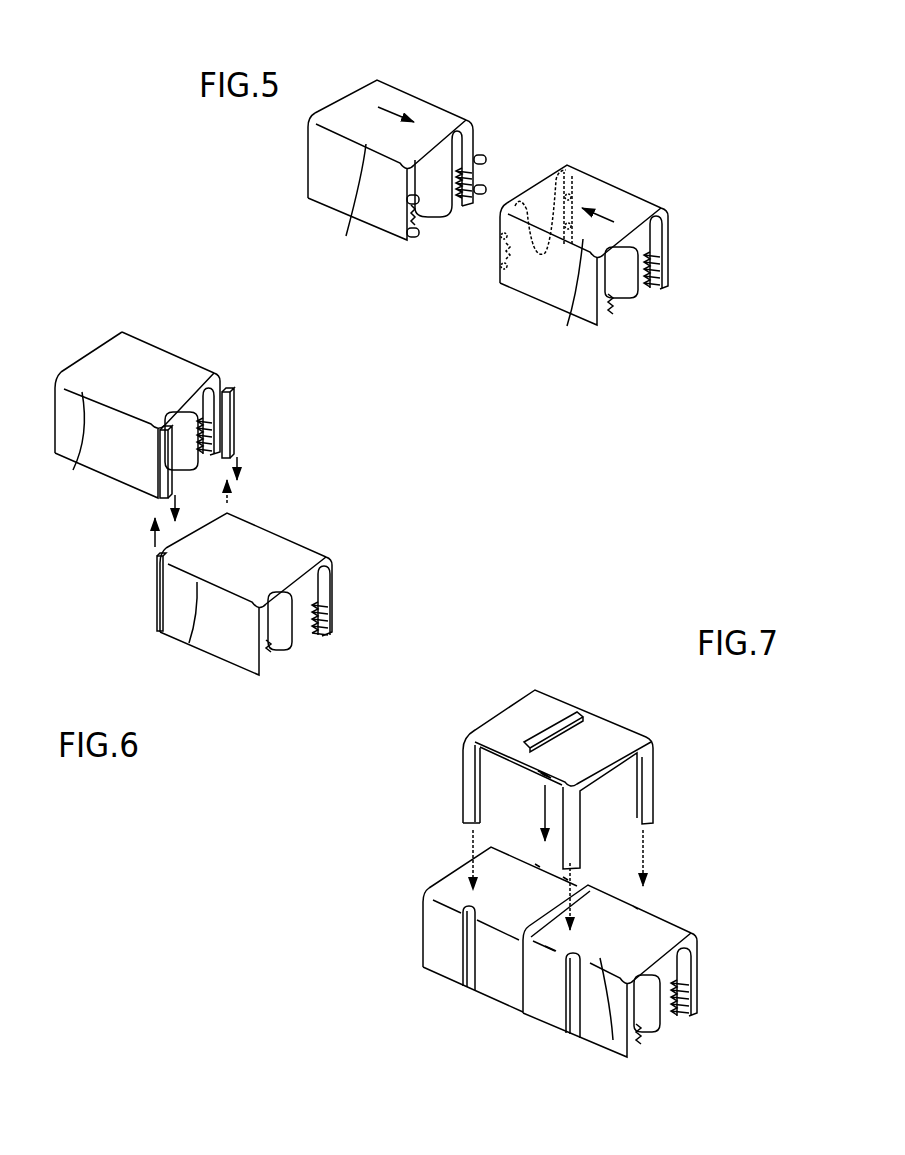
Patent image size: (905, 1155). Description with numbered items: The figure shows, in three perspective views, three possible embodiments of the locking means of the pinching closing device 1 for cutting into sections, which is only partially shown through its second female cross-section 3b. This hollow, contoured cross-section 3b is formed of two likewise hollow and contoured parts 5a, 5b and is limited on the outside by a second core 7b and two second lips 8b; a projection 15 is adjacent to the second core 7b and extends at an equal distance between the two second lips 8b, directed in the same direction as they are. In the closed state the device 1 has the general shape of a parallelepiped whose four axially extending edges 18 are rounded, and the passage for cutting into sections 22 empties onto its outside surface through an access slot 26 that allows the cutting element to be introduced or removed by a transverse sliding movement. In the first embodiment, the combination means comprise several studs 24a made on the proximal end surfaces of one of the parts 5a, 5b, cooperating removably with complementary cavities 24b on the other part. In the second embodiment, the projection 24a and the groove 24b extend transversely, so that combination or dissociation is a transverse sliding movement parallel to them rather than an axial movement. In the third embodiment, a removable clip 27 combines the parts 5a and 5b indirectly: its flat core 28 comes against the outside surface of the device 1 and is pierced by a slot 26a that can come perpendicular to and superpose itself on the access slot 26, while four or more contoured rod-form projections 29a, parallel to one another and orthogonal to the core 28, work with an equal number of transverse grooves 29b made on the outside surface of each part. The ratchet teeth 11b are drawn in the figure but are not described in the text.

In FIG. 5, the pinching closing device for cutting into sections 1 is at (682, 208).
In FIG. 6, the pinching closing device for cutting into sections 1 is at (209, 358).
In FIG. 7, the pinching closing device for cutting into sections 1 is at (564, 688).
In FIG. 5, the second female cross-section 3b is at (449, 96).
In FIG. 6, the second female cross-section 3b is at (136, 330).
In FIG. 7, the second female cross-section 3b is at (670, 911).
In FIG. 5, the first part of the female cross-section 5a is at (375, 78).
In FIG. 6, the first part of the female cross-section 5a is at (90, 350).
In FIG. 7, the first part of the female cross-section 5a is at (447, 968).
In FIG. 5, the second part of the female cross-section 5b is at (622, 190).
In FIG. 6, the second part of the female cross-section 5b is at (215, 640).
In FIG. 7, the second part of the female cross-section 5b is at (612, 1035).
In FIG. 5, the second core 7b is at (402, 105).
In FIG. 6, the second core 7b is at (157, 362).
In FIG. 7, the second core 7b is at (520, 905).
In FIG. 5, the second lips 8b is at (530, 285).
In FIG. 6, the second lips 8b is at (108, 462).
In FIG. 7, the second lips 8b is at (515, 980).
In FIG. 5, the ratchet teeth 11b is at (657, 234).
In FIG. 6, the ratchet teeth 11b is at (322, 588).
In FIG. 7, the ratchet teeth 11b is at (688, 965).
In FIG. 5, the projection 15 is at (637, 262).
In FIG. 6, the projection 15 is at (293, 612).
In FIG. 7, the projection 15 is at (662, 985).
In FIG. 5, the edges 18 is at (348, 232).
In FIG. 6, the edges 18 is at (80, 460).
In FIG. 7, the edges 18 is at (600, 1010).
In FIG. 7, the passage for cutting into sections 22 is at (553, 925).
In FIG. 5, the studs or projection 24a is at (486, 152).
In FIG. 6, the studs or projection 24a is at (232, 397).
In FIG. 5, the cavities or groove 24b is at (568, 165).
In FIG. 6, the cavities or groove 24b is at (158, 596).
In FIG. 7, the access slot 26 is at (572, 903).
In FIG. 7, the slot of the clip core 26a is at (553, 725).
In FIG. 7, the clip 27 is at (612, 745).
In FIG. 7, the flat core 28 is at (513, 718).
In FIG. 7, the rod-form projections 29a is at (482, 787).
In FIG. 7, the transverse grooves 29b is at (467, 943).